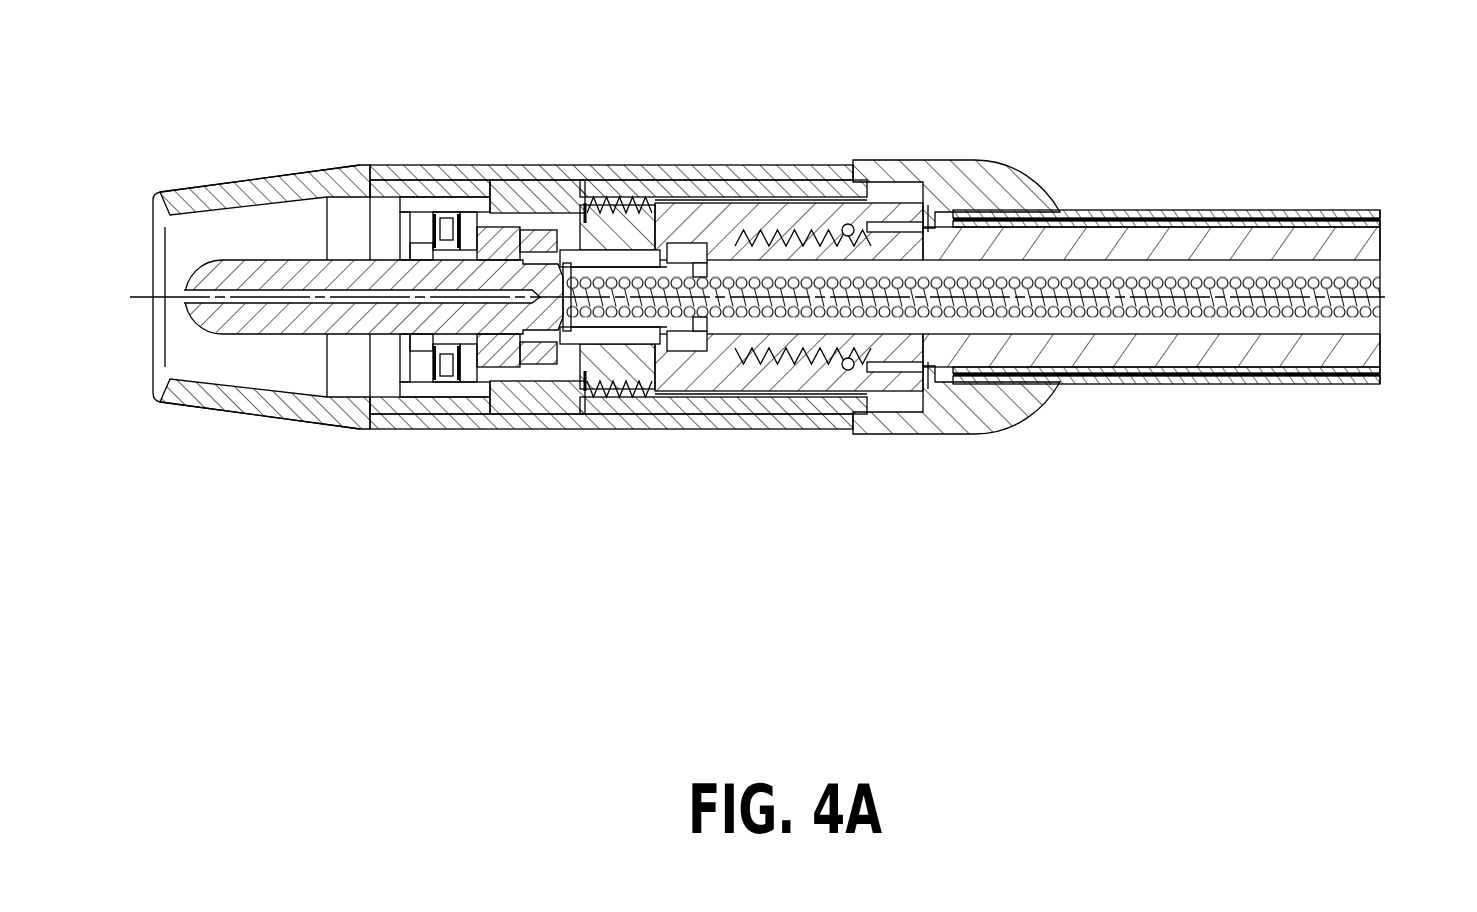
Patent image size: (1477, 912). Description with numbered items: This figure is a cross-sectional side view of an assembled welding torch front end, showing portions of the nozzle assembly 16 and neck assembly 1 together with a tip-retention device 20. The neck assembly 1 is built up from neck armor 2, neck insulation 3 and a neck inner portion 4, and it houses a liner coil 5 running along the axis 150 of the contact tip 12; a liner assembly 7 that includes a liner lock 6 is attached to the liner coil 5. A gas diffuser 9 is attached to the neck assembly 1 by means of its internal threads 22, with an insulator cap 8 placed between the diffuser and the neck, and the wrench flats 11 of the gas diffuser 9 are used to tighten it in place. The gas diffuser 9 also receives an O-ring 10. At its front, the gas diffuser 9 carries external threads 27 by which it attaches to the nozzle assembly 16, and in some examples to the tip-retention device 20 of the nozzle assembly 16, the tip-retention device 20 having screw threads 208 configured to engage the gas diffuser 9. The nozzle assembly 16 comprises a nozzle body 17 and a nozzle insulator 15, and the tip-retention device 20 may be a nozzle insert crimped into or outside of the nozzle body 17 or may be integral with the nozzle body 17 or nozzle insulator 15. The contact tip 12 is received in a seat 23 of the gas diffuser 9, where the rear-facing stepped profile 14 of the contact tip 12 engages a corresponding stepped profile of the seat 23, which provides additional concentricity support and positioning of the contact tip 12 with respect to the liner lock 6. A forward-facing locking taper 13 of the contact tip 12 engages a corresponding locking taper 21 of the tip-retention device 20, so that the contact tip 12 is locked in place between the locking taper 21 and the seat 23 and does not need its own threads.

The neck assembly 1 is at (1311, 209).
The neck armor 2 is at (1306, 386).
The neck insulation 3 is at (1243, 386).
The neck inner portion 4 is at (1178, 386).
The liner coil 5 is at (1158, 268).
The liner lock 6 is at (617, 194).
The liner assembly 7 is at (656, 345).
The insulator cap 8 is at (1011, 162).
The gas diffuser 9 is at (766, 392).
The O-ring 10 is at (853, 169).
The wrench flats 11 is at (497, 218).
The contact tip 12 is at (262, 258).
The locking taper 13 is at (447, 247).
The stepped profile 14 is at (537, 338).
The nozzle insulator 15 is at (408, 420).
The nozzle assembly 16 is at (192, 404).
The nozzle body 17 is at (272, 415).
The tip-retention device 20 is at (528, 400).
The locking taper 21 is at (447, 345).
The internal threads 22 is at (845, 350).
The seat 23 is at (540, 232).
The external threads 27 is at (628, 332).
The screw threads 208 is at (629, 248).
The axis 150 is at (1393, 297).